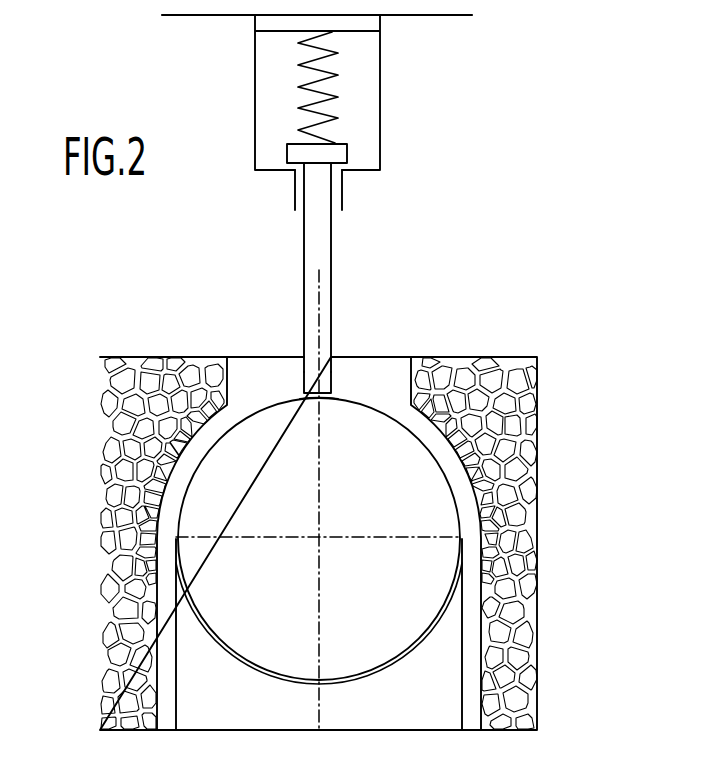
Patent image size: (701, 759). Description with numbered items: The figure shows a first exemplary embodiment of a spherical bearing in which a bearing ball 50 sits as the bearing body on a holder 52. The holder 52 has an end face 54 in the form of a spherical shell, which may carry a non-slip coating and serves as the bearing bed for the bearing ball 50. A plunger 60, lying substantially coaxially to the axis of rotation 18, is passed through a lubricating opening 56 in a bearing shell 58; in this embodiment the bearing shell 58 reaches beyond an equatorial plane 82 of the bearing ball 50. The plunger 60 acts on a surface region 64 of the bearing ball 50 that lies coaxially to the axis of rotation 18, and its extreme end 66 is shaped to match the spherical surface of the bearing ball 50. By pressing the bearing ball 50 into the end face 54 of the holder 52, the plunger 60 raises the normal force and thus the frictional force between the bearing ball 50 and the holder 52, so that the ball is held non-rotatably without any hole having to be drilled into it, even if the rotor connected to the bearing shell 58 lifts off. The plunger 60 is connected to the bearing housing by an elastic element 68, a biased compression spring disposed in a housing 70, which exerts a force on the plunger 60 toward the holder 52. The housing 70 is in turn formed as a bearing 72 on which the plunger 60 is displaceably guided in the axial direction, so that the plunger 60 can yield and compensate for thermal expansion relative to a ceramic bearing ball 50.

The axis of rotation 18 is at (319, 292).
The bearing ball 50 is at (389, 620).
The holder 52 is at (443, 695).
The end face 54 is at (312, 680).
The lubricating opening 56 is at (248, 357).
The bearing shell 58 is at (123, 512).
The plunger 60 is at (310, 243).
The surface region 64 is at (332, 372).
The extreme end 66 is at (328, 374).
The elastic element 68 is at (330, 112).
The housing 70 is at (255, 60).
The bearing 72 is at (343, 210).
The equatorial plane 82 is at (408, 537).